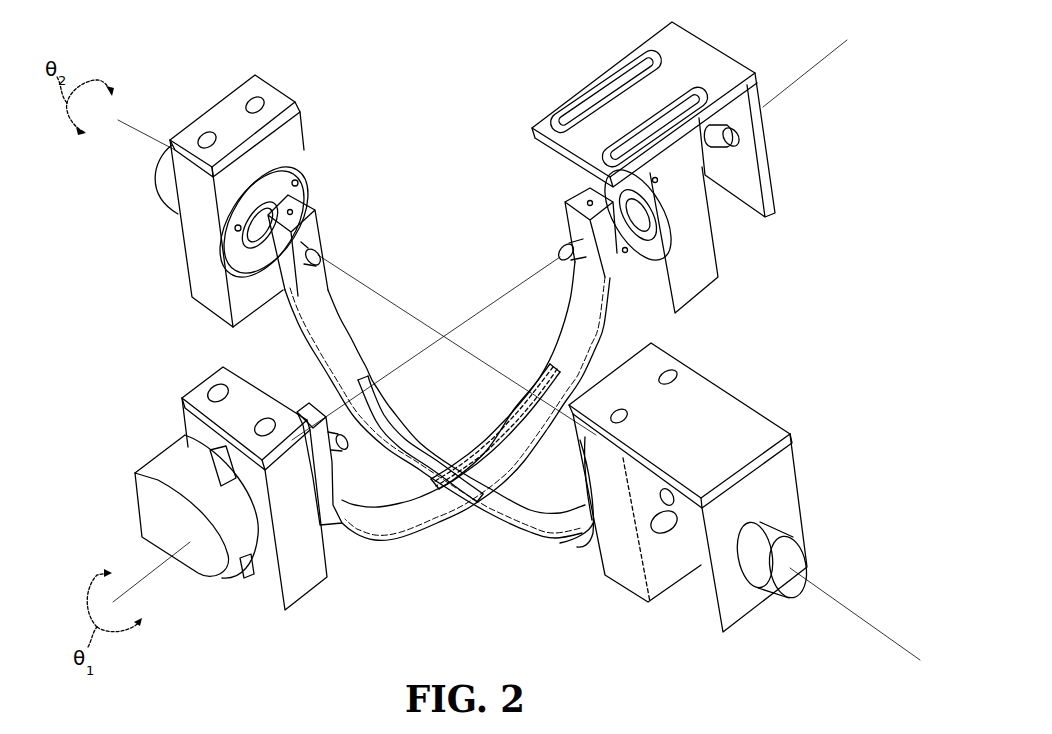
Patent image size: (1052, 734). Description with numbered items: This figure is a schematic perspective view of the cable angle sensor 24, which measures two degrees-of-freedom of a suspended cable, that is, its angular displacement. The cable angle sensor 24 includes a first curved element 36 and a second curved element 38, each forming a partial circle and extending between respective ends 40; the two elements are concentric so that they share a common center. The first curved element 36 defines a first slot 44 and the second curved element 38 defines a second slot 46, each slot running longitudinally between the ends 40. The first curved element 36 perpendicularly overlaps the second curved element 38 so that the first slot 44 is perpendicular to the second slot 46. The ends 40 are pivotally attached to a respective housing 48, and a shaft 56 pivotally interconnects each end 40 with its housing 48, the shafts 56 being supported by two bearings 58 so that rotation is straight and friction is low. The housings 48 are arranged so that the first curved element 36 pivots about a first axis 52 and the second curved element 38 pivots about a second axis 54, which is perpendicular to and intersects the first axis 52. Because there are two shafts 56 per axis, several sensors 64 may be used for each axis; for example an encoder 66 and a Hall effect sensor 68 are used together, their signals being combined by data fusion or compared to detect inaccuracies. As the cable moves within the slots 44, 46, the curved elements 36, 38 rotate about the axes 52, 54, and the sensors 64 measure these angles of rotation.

The cable angle sensor 24 is at (770, 58).
The first curved element 36 is at (382, 538).
The second curved element 38 is at (342, 310).
The ends 40 is at (292, 200).
The first slot 44 is at (540, 377).
The second slot 46 is at (432, 447).
The housing 48 is at (207, 258).
The first axis 52 is at (153, 570).
The second axis 54 is at (130, 137).
The shaft 56 is at (313, 233).
The bearings 58 is at (658, 530).
The sensors 64 is at (135, 178).
The encoder 66 is at (148, 190).
The Hall effect sensor 68 is at (735, 142).